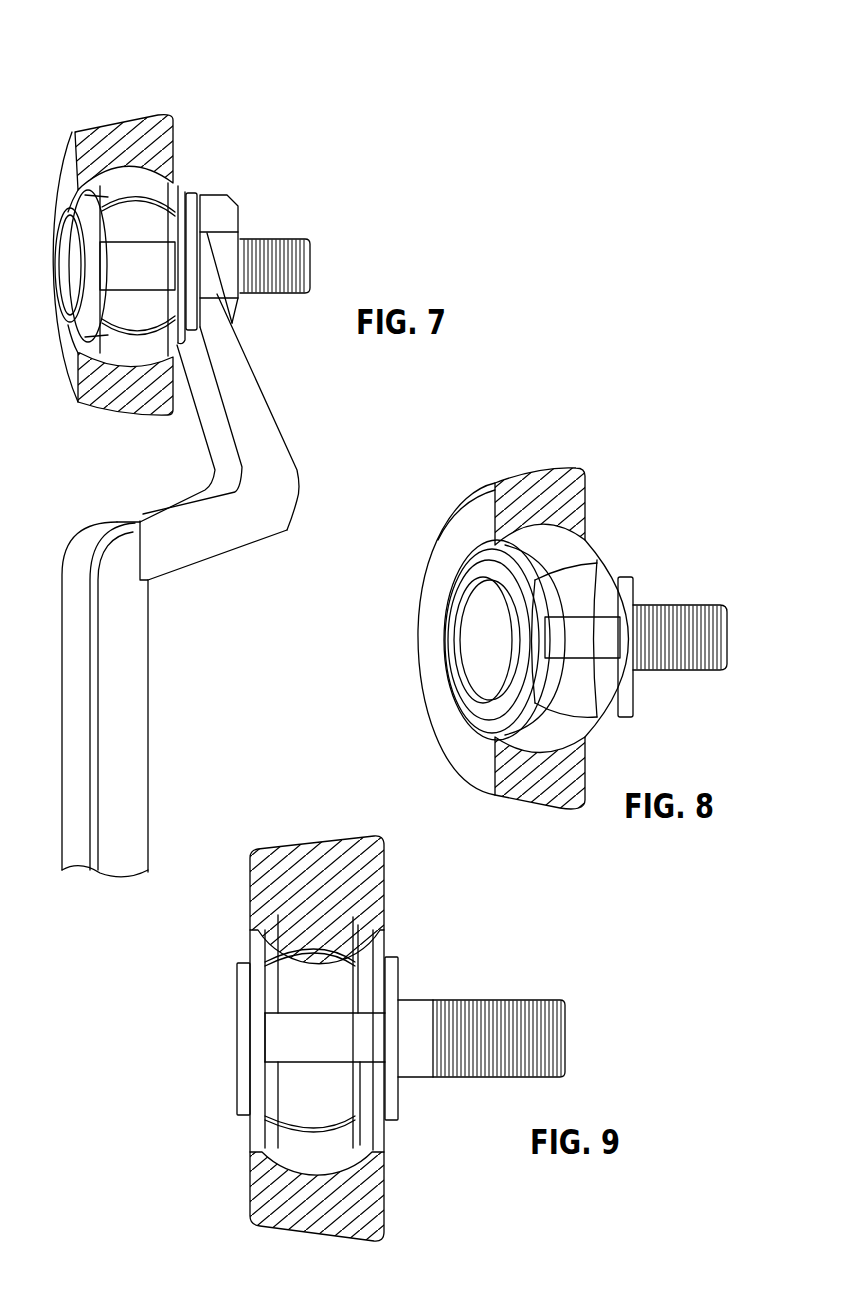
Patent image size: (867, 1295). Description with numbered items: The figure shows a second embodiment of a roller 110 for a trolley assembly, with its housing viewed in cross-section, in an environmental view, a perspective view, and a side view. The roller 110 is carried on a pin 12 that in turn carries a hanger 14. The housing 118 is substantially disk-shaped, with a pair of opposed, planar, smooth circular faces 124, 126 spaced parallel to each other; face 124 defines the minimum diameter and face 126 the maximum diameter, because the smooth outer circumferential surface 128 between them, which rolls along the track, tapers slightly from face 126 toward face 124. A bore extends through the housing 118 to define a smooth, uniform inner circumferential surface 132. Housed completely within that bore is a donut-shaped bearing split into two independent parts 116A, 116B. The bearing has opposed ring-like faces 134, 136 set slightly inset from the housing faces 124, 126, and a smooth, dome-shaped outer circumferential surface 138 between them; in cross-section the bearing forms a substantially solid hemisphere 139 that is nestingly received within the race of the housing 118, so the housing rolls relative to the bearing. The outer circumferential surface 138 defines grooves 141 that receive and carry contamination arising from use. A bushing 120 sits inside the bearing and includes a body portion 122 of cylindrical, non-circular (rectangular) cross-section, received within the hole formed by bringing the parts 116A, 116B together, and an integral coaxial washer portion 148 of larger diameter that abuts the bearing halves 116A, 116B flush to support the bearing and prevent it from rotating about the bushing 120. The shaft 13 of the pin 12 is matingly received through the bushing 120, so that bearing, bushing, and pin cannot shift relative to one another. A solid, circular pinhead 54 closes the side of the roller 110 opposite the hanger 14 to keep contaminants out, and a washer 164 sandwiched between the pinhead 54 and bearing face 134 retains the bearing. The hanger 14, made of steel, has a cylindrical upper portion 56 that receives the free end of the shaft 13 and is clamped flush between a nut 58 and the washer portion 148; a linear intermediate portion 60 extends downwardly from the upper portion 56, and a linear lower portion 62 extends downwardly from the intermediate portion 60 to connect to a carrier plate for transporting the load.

In FIG. 7, the pin 12 is at (316, 245).
In FIG. 8, the pin 12 is at (632, 641).
In FIG. 9, the pin 12 is at (408, 1027).
In FIG. 9, the shaft 13 is at (507, 1000).
In FIG. 7, the hanger 14 is at (231, 585).
In FIG. 9, the pinhead 54 is at (205, 1029).
In FIG. 7, the cylindrical upper portion 56 is at (278, 415).
In FIG. 7, the nut 58 is at (235, 202).
In FIG. 7, the linear intermediate portion 60 is at (220, 562).
In FIG. 7, the linear lower portion 62 is at (148, 763).
In FIG. 7, the roller 110 is at (122, 112).
In FIG. 8, the roller 110 is at (576, 595).
In FIG. 9, the roller 110 is at (319, 1011).
In FIG. 8, the first part of the split bearing 116A is at (604, 542).
In FIG. 9, the first part of the split bearing 116A is at (365, 907).
In FIG. 8, the second part of the split bearing 116B is at (600, 735).
In FIG. 9, the second part of the split bearing 116B is at (369, 1168).
In FIG. 8, the housing 118 is at (594, 499).
In FIG. 9, the housing 118 is at (390, 855).
In FIG. 8, the bushing 120 is at (647, 690).
In FIG. 9, the bushing 120 is at (408, 1104).
In FIG. 8, the body portion 122 is at (566, 631).
In FIG. 9, the body portion 122 is at (272, 1048).
In FIG. 9, the face 124 is at (256, 1182).
In FIG. 9, the face 126 is at (385, 1200).
In FIG. 9, the outer circumferential surface 128 is at (314, 1240).
In FIG. 9, the inner circumferential surface 132 is at (298, 898).
In FIG. 9, the face 134 is at (260, 1132).
In FIG. 9, the face 136 is at (355, 1110).
In FIG. 9, the outer circumferential surface 138 is at (295, 1170).
In FIG. 9, the hemisphere 139 is at (288, 933).
In FIG. 9, the groove 141 is at (280, 988).
In FIG. 8, the washer portion 148 is at (634, 585).
In FIG. 9, the washer portion 148 is at (398, 1083).
In FIG. 9, the washer 164 is at (258, 953).